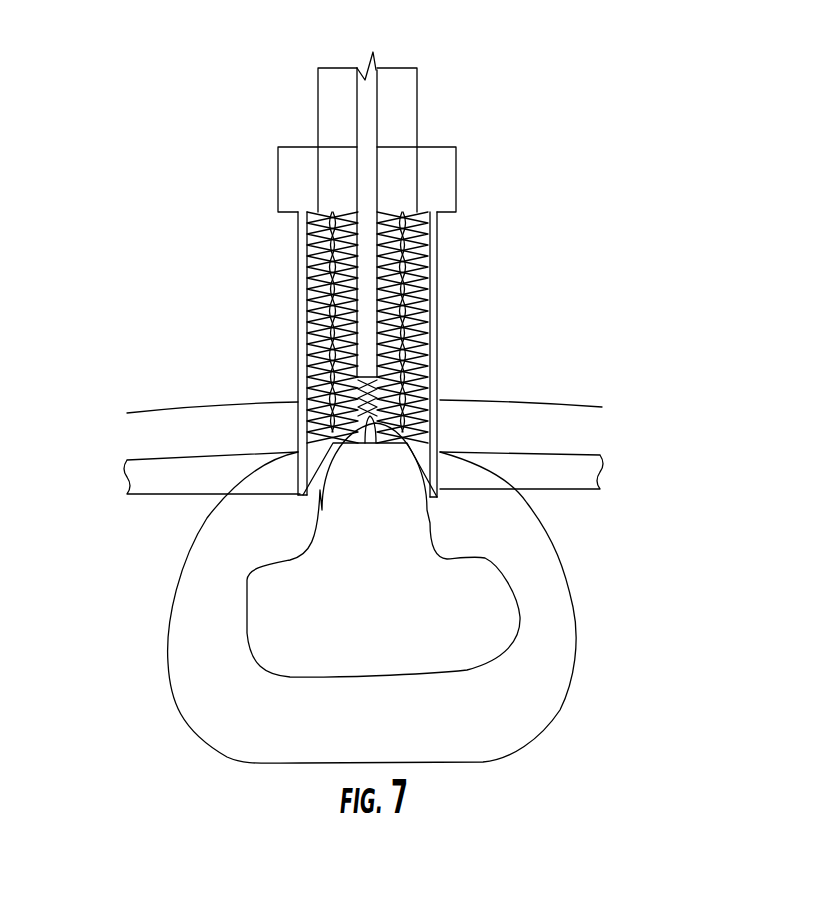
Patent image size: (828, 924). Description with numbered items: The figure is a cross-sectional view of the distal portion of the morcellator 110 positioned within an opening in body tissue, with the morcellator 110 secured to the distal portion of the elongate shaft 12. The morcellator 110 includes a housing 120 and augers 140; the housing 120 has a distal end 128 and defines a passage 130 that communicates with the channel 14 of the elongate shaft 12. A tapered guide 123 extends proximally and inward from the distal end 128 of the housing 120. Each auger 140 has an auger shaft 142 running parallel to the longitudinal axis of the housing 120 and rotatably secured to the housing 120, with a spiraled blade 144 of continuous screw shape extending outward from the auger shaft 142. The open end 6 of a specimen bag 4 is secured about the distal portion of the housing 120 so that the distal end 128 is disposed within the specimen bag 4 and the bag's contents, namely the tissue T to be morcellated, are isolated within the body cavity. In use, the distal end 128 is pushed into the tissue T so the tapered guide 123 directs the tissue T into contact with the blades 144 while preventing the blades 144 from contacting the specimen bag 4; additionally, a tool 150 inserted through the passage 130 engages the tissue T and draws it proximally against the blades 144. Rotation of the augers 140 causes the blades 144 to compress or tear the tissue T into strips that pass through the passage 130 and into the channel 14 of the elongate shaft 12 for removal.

The specimen bag 4 is at (573, 693).
The open end 6 is at (440, 407).
The tissue T is at (506, 623).
The elongate shaft 12 is at (417, 128).
The channel 14 is at (400, 115).
The morcellator 110 is at (244, 216).
The housing 120 is at (437, 357).
The tapered guide 123 is at (298, 452).
The distal end 128 is at (438, 497).
The passage 130 is at (390, 177).
The auger 140 is at (433, 310).
The auger shaft 142 is at (320, 303).
The blade 144 is at (307, 268).
The tool 150 is at (370, 195).